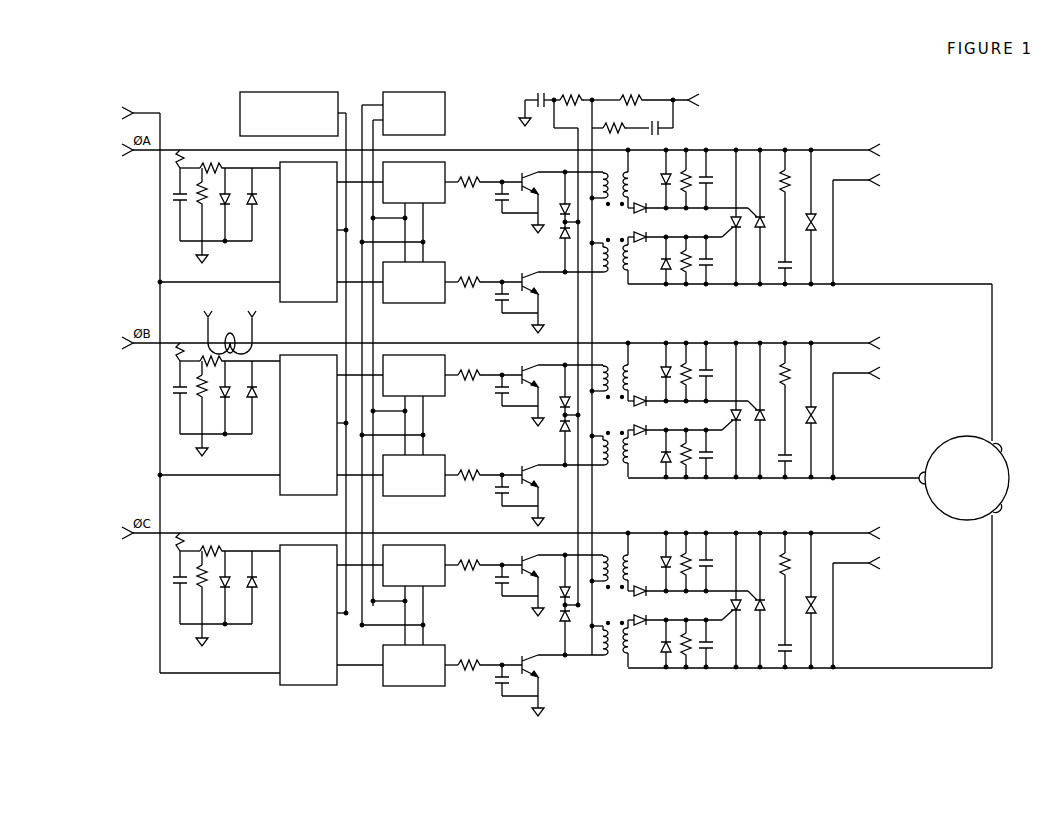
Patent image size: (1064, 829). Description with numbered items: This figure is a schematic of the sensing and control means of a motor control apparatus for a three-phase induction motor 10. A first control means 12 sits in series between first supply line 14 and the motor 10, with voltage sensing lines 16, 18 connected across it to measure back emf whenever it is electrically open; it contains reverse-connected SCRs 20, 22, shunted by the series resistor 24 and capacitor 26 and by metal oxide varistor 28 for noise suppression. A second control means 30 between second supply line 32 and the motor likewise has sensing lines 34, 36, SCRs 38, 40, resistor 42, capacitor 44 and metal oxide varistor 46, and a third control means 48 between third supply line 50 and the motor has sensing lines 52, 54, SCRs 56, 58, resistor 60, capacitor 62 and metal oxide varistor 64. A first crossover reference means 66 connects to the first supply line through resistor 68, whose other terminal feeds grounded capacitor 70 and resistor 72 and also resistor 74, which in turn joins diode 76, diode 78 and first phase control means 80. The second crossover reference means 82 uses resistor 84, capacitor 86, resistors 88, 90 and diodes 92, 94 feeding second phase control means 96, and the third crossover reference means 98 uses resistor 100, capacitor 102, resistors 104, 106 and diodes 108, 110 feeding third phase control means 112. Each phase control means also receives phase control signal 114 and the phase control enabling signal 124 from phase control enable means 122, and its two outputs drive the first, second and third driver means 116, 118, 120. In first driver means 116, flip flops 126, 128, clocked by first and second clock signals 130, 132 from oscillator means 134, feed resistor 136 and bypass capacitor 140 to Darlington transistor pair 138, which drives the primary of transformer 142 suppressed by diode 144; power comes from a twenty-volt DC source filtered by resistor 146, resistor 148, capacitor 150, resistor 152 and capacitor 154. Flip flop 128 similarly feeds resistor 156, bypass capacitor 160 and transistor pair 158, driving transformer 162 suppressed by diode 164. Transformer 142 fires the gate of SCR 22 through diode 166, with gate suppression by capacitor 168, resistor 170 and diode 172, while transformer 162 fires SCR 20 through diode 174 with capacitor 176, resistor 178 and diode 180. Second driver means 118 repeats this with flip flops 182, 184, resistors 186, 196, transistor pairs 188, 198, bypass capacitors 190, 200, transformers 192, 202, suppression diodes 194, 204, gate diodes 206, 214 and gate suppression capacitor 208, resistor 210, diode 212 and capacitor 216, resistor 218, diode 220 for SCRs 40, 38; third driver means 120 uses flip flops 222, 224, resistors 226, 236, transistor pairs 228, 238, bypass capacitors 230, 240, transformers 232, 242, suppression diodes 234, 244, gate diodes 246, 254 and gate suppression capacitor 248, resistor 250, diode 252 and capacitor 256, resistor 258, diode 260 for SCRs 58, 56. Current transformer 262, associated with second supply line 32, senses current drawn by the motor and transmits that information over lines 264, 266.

The induction motor 10 is at (961, 440).
The first control means 12 is at (758, 200).
The first supply line 14 is at (487, 150).
The first voltage sensing line 16 is at (884, 151).
The first voltage sensing line 18 is at (866, 229).
The SCR 20 is at (726, 217).
The SCR 22 is at (768, 217).
The resistor 24 is at (792, 206).
The capacitor 26 is at (792, 266).
The metal oxide varistor 28 is at (819, 217).
The second control means 30 is at (758, 393).
The second supply line 32 is at (487, 343).
The second voltage sensing line 34 is at (884, 344).
The second voltage sensing line 36 is at (866, 422).
The SCR 38 is at (726, 410).
The SCR 40 is at (768, 410).
The resistor 42 is at (792, 399).
The capacitor 44 is at (792, 459).
The metal oxide varistor 46 is at (819, 410).
The third control means 48 is at (758, 583).
The third supply line 50 is at (487, 533).
The third voltage sensing line 52 is at (884, 534).
The third voltage sensing line 54 is at (866, 612).
The SCR 56 is at (726, 600).
The SCR 58 is at (768, 600).
The resistor 60 is at (792, 589).
The capacitor 62 is at (792, 649).
The metal oxide varistor 64 is at (819, 600).
The first crossover reference means 66 is at (229, 254).
The resistor 68 is at (171, 159).
The capacitor 70 is at (173, 204).
The resistor 72 is at (195, 204).
The resistor 74 is at (215, 161).
The diode 76 is at (218, 204).
The diode 78 is at (246, 204).
The first phase control means 80 is at (308, 239).
The second crossover reference means 82 is at (216, 450).
The resistor 84 is at (170, 352).
The capacitor 86 is at (173, 397).
The resistor 88 is at (195, 397).
The resistor 90 is at (215, 354).
The diode 92 is at (218, 397).
The diode 94 is at (246, 397).
The second phase control means 96 is at (308, 432).
The third crossover reference means 98 is at (216, 640).
The resistor 100 is at (169, 542).
The capacitor 102 is at (171, 587).
The resistor 104 is at (193, 587).
The resistor 106 is at (218, 544).
The diode 108 is at (216, 587).
The diode 110 is at (245, 587).
The third phase control means 112 is at (308, 622).
The phase control signal 114 is at (189, 390).
The first driver means 116 is at (485, 113).
The second driver means 118 is at (561, 331).
The third driver means 120 is at (553, 529).
The phase control enable means 122 is at (240, 127).
The phase control enabling signal 124 is at (346, 113).
The flip flop 126 is at (424, 190).
The flip flop 128 is at (424, 275).
The first clock signal 130 is at (373, 140).
The second clock signal 132 is at (362, 105).
The oscillator means 134 is at (445, 128).
The resistor 136 is at (475, 174).
The transistor pair 138 is at (540, 186).
The bypass capacitor 140 is at (508, 201).
The transformer 142 is at (600, 222).
The diode 144 is at (555, 197).
The resistor 146 is at (637, 95).
The resistor 148 is at (615, 134).
The capacitor 150 is at (658, 134).
The resistor 152 is at (577, 95).
The capacitor 154 is at (536, 98).
The resistor 156 is at (475, 274).
The transistor pair 158 is at (540, 286).
The bypass capacitor 160 is at (508, 301).
The transformer 162 is at (622, 237).
The diode 164 is at (555, 247).
The diode 166 is at (653, 212).
The capacitor 168 is at (713, 179).
The resistor 170 is at (694, 179).
The diode 172 is at (655, 179).
The diode 174 is at (644, 244).
The capacitor 176 is at (714, 260).
The resistor 178 is at (693, 260).
The diode 180 is at (654, 260).
The flip flop 182 is at (424, 383).
The flip flop 184 is at (424, 468).
The resistor 186 is at (475, 367).
The transistor pair 188 is at (546, 395).
The bypass capacitor 190 is at (508, 394).
The transformer 192 is at (600, 415).
The diode 194 is at (555, 390).
The resistor 196 is at (475, 467).
The transistor pair 198 is at (546, 495).
The bypass capacitor 200 is at (508, 494).
The transformer 202 is at (629, 410).
The diode 204 is at (555, 440).
The diode 206 is at (653, 405).
The capacitor 208 is at (713, 372).
The resistor 210 is at (694, 372).
The diode 212 is at (655, 372).
The diode 214 is at (644, 437).
The capacitor 216 is at (714, 453).
The resistor 218 is at (693, 453).
The diode 220 is at (654, 453).
The flip flop 222 is at (424, 573).
The flip flop 224 is at (424, 658).
The resistor 226 is at (475, 557).
The transistor pair 228 is at (546, 585).
The bypass capacitor 230 is at (508, 584).
The transformer 232 is at (600, 605).
The diode 234 is at (555, 580).
The resistor 236 is at (475, 657).
The transistor pair 238 is at (546, 685).
The bypass capacitor 240 is at (508, 684).
The transformer 242 is at (629, 600).
The diode 244 is at (555, 630).
The diode 246 is at (653, 595).
The capacitor 248 is at (713, 562).
The resistor 250 is at (694, 562).
The diode 252 is at (655, 562).
The diode 254 is at (644, 627).
The capacitor 256 is at (714, 643).
The resistor 258 is at (693, 643).
The diode 260 is at (654, 643).
The current transformer 262 is at (263, 339).
The line 264 is at (208, 306).
The line 266 is at (252, 306).